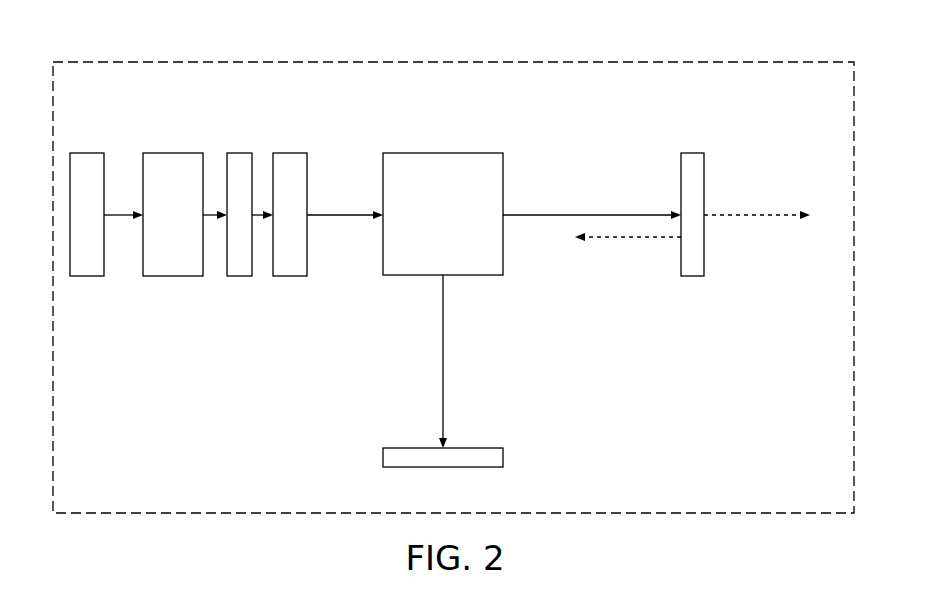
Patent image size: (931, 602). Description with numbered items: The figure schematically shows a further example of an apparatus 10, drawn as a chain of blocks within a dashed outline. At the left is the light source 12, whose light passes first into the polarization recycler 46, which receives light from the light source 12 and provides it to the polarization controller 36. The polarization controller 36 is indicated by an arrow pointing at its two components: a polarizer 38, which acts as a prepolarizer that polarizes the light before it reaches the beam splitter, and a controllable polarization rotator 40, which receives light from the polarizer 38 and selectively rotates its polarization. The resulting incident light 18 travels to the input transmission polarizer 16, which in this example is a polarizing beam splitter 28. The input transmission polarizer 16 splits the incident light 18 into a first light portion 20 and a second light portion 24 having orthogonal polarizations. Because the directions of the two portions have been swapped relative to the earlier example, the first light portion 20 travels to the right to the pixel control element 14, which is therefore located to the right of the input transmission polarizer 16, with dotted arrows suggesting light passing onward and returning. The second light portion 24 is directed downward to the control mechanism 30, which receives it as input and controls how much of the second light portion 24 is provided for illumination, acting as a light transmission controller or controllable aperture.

The apparatus 10 is at (742, 62).
The light source 12 is at (90, 153).
The pixel control element 14 is at (695, 153).
The input transmission polarizer 16 is at (443, 188).
The polarizing beam splitter 28 is at (455, 153).
The incident light 18 is at (366, 212).
The first light portion 20 is at (581, 214).
The second light portion 24 is at (443, 340).
The control mechanism 30 is at (503, 457).
The polarization controller 36 is at (270, 134).
The polarizer 38 is at (243, 276).
The controllable polarization rotator 40 is at (288, 276).
The polarization recycler 46 is at (165, 276).